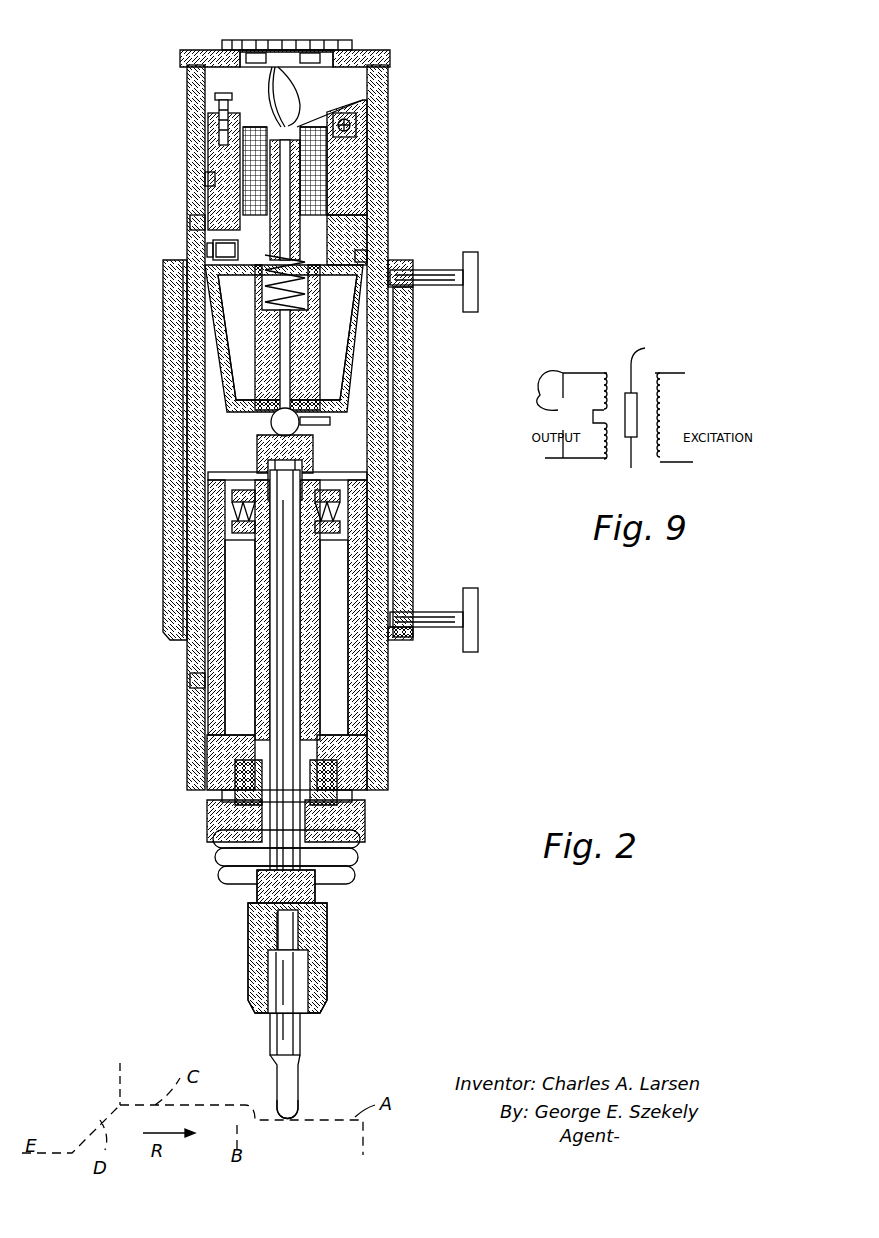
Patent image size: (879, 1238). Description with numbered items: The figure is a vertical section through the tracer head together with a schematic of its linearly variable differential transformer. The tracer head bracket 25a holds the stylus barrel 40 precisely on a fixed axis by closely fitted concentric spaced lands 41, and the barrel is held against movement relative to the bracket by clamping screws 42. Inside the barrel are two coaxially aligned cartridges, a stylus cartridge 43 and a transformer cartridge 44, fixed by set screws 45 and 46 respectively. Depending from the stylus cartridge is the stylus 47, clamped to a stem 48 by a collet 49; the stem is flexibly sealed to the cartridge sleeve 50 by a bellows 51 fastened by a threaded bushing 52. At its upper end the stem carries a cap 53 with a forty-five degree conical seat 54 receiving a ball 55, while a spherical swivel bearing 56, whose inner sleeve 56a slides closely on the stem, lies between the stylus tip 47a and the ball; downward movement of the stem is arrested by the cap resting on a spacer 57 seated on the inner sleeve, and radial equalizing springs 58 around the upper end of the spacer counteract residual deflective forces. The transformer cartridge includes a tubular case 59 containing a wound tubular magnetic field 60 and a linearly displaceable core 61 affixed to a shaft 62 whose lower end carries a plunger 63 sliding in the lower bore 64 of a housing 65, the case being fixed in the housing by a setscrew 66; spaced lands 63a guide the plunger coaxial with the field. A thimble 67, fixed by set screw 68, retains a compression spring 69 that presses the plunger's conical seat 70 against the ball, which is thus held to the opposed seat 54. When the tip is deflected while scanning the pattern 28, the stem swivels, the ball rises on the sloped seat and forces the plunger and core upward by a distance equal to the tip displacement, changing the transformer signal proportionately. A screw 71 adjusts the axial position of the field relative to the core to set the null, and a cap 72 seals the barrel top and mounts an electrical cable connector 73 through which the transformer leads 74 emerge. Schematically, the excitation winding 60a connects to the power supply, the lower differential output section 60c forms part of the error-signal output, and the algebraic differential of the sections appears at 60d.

In FIG. 2, the cap 72 is at (182, 52).
In FIG. 2, the electrical cable connector 73 is at (340, 40).
In FIG. 2, the transformer leads 74 is at (300, 100).
In FIG. 2, the stylus barrel 40 is at (188, 108).
In FIG. 2, the core 61 is at (356, 108).
In FIG. 9, the core 61 is at (645, 348).
In FIG. 2, the wound tubular magnetic field 60 is at (320, 148).
In FIG. 2, the transformer cartridge 44 is at (300, 228).
In FIG. 2, the housing 65 is at (360, 183).
In FIG. 2, the tubular case 59 is at (350, 225).
In FIG. 2, the screw 71 is at (218, 140).
In FIG. 2, the setscrew 66 is at (205, 180).
In FIG. 2, the set screw 46 is at (190, 222).
In FIG. 2, the set screw 68 is at (213, 252).
In FIG. 2, the thimble 67 is at (207, 248).
In FIG. 2, the concentric spaced lands 41 is at (187, 312).
In FIG. 2, the tracer head bracket 25a is at (183, 360).
In FIG. 2, the shaft 62 is at (345, 355).
In FIG. 2, the spaced lands 63a is at (220, 300).
In FIG. 2, the lower bore 64 is at (340, 395).
In FIG. 2, the compression spring 69 is at (310, 300).
In FIG. 2, the plunger 63 is at (300, 424).
In FIG. 2, the conical seat 70 is at (320, 428).
In FIG. 2, the cap 53 is at (257, 455).
In FIG. 2, the conical seat 54 is at (345, 482).
In FIG. 2, the ball 55 is at (350, 472).
In FIG. 2, the spacer 57 is at (317, 700).
In FIG. 2, the springs 58 is at (232, 515).
In FIG. 2, the stylus cartridge 43 is at (338, 670).
In FIG. 2, the stylus 47 is at (308, 1042).
In FIG. 2, the stylus tip 47a is at (300, 1115).
In FIG. 2, the set screw 45 is at (190, 682).
In FIG. 2, the cartridge sleeve 50 is at (367, 740).
In FIG. 2, the inner sleeve 56a is at (337, 775).
In FIG. 2, the spherical swivel bearing 56 is at (345, 795).
In FIG. 2, the threaded bushing 52 is at (215, 838).
In FIG. 2, the bellows 51 is at (360, 850).
In FIG. 2, the stem 48 is at (257, 868).
In FIG. 2, the collet 49 is at (250, 960).
In FIG. 2, the clamping screws 42 is at (478, 290).
In FIG. 2, the pattern 28 is at (121, 1068).
In FIG. 9, the algebraic differential output 60d is at (563, 372).
In FIG. 9, the lower differential section of output winding 60c is at (607, 458).
In FIG. 9, the excitation winding 60a is at (663, 397).